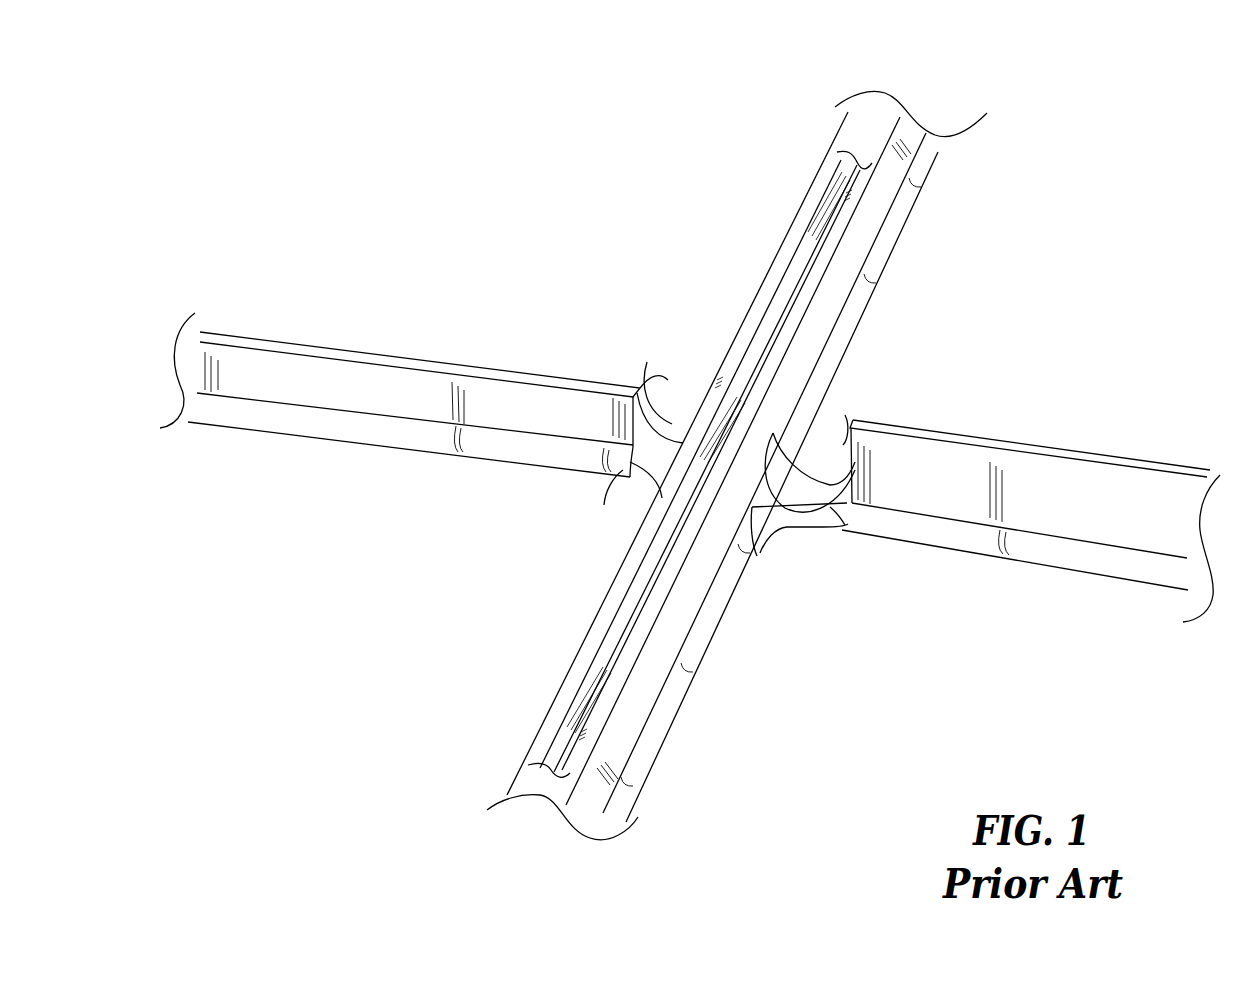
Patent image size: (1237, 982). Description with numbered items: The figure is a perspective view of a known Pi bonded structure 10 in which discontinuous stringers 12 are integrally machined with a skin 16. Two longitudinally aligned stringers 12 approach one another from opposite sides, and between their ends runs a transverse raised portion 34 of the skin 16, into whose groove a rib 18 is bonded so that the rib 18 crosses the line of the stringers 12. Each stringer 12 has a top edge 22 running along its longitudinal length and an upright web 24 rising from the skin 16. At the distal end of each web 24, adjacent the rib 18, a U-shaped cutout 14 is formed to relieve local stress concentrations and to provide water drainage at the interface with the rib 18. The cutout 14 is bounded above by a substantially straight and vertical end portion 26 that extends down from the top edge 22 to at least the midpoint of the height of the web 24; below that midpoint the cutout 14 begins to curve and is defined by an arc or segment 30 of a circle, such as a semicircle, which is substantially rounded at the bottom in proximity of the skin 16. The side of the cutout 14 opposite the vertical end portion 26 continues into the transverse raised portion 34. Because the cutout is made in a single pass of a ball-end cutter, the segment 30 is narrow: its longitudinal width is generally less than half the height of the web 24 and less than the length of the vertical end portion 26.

The Pi bonded structure 10 is at (1124, 237).
The stringer 12 is at (690, 434).
The U-shaped cutout 14 is at (668, 417).
The skin 16 is at (499, 209).
The rib 18 is at (737, 465).
The top edge 22 is at (500, 374).
The web 24 is at (359, 384).
The vertical end portion 26 is at (645, 392).
The segment 30 is at (655, 458).
The transverse raised portion 34 is at (818, 187).